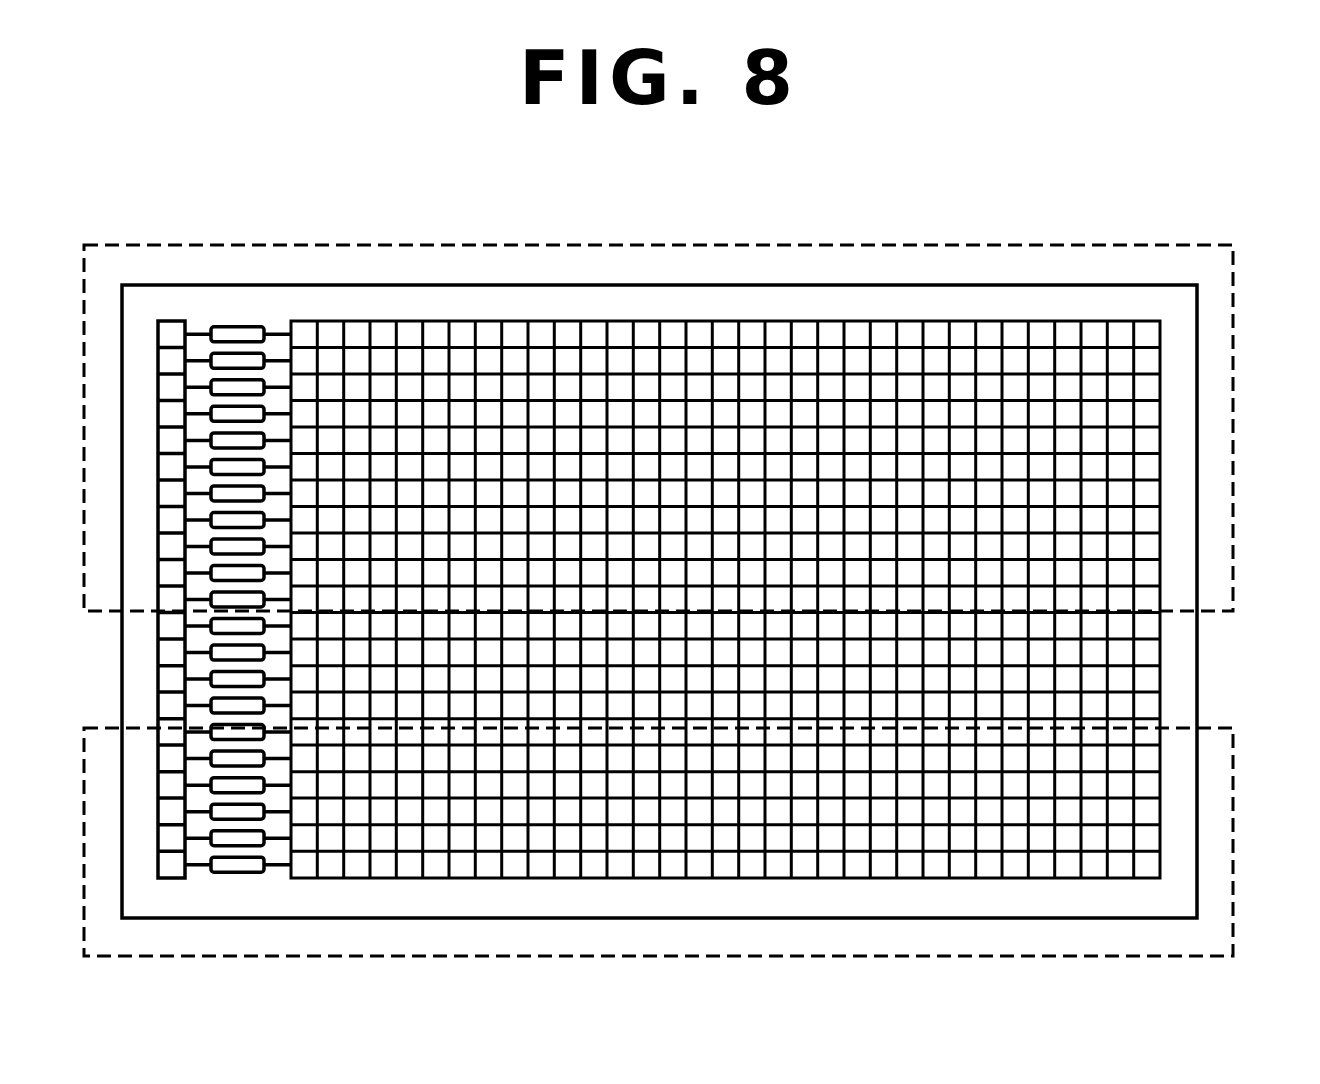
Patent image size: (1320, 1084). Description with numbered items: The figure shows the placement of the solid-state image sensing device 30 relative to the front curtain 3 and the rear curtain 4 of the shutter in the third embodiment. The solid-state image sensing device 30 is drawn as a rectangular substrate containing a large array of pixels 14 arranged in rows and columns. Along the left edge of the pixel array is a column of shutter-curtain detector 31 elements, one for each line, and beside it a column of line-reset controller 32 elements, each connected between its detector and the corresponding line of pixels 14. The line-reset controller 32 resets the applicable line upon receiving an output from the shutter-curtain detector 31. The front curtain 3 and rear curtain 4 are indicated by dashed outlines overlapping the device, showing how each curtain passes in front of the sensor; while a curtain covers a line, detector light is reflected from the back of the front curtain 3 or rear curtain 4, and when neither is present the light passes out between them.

The front curtain 3 is at (1237, 840).
The rear curtain 4 is at (1237, 428).
The pixels 14 is at (304, 321).
The solid-state image sensing device 30 is at (1197, 668).
The shutter-curtain detector 31 is at (171, 321).
The line-reset controller 32 is at (241, 327).